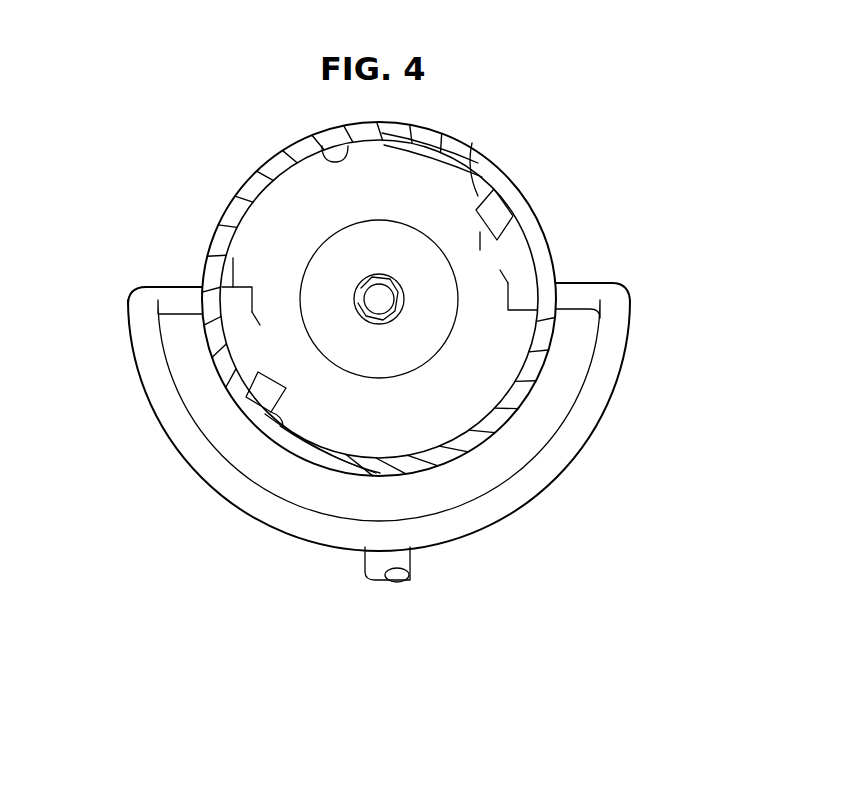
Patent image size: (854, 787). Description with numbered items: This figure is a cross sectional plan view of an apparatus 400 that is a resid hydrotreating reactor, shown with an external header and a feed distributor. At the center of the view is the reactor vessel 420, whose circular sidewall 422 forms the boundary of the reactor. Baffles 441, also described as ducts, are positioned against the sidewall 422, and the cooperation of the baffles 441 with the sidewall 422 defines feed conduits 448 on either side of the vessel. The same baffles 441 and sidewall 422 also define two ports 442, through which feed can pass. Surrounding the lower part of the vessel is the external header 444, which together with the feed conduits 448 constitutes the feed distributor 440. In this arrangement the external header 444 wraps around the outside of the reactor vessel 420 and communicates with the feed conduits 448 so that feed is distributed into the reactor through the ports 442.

The apparatus 400 is at (545, 185).
The reactor vessel 420 is at (250, 166).
The sidewall 422 is at (330, 156).
The feed distributor 440 is at (628, 340).
The baffles 441 is at (496, 296).
The ports 442 is at (470, 175).
The external header 444 is at (582, 453).
The feed conduits 448 is at (233, 270).